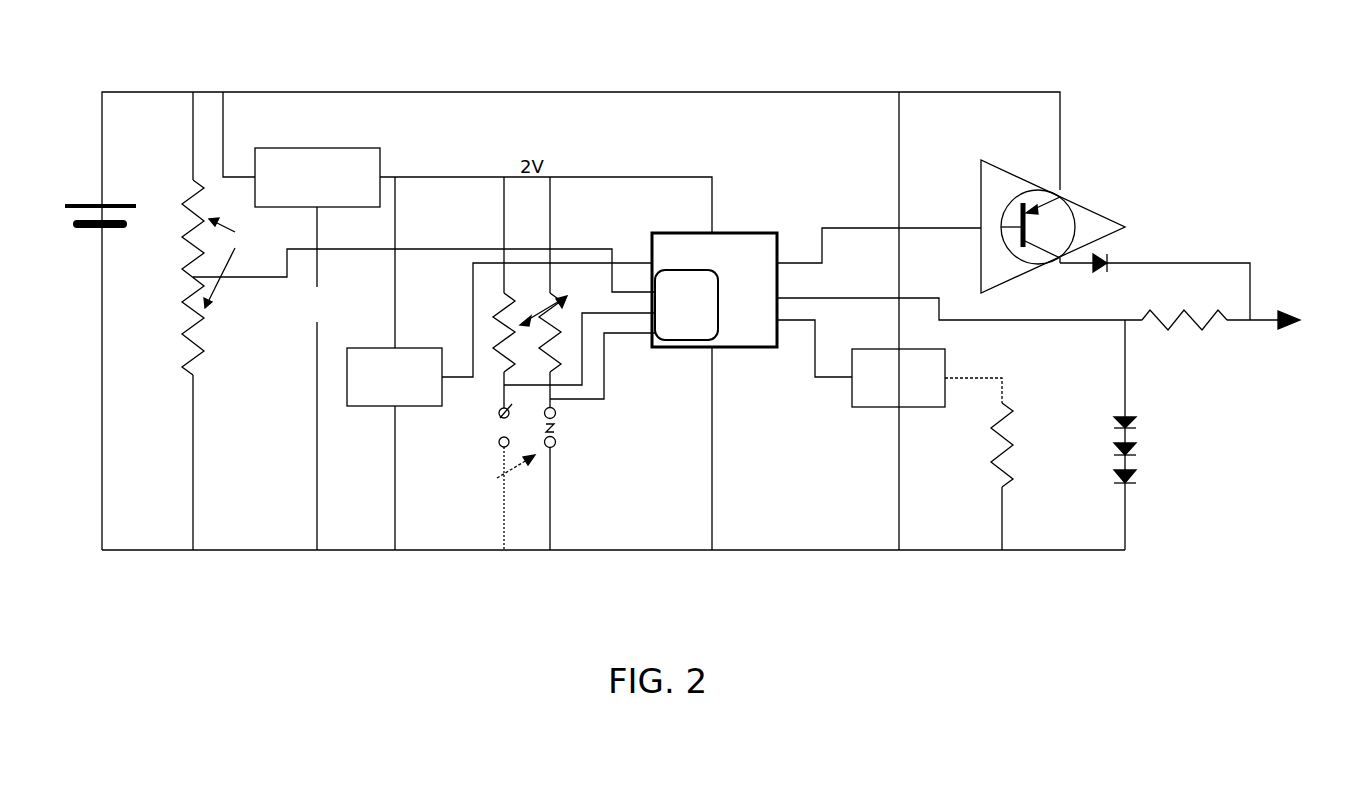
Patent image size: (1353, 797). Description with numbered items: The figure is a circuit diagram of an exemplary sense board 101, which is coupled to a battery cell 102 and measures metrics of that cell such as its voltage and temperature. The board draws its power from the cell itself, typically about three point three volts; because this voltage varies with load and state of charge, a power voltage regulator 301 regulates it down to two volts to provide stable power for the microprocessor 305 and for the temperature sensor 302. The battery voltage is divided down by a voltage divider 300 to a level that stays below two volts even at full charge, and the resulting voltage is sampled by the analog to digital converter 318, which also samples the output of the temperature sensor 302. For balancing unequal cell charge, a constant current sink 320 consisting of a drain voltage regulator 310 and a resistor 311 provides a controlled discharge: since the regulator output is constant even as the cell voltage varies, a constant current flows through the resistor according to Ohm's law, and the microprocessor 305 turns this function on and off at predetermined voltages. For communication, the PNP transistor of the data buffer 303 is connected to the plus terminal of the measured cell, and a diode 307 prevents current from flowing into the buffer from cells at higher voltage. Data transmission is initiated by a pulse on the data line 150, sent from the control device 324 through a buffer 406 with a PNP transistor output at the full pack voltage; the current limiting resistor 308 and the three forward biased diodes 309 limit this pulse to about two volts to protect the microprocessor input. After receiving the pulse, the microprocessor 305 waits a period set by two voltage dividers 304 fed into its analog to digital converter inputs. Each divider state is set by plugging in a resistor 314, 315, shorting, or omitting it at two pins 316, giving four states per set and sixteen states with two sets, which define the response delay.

The sense board 101 is at (747, 102).
The battery cell 102 is at (102, 205).
The data line 150 is at (1268, 322).
The voltage divider 300 is at (418, 321).
The power voltage regulator 301 is at (271, 172).
The temperature sensor 302 is at (357, 368).
The data buffer 303 is at (568, 295).
The voltage dividers 304 is at (490, 484).
The microprocessor 305 is at (896, 295).
The diode 307 is at (1110, 263).
The current limiting resistor 308 is at (1186, 322).
The three forward biased diodes 309 is at (1134, 479).
The drain voltage regulator 310 is at (880, 365).
The resistor 311 is at (1003, 455).
The resistor 314 is at (498, 415).
The resistor 315 is at (557, 442).
The pins 316 is at (557, 413).
The analog to digital converter 318 is at (674, 330).
The constant current sink 320 is at (1021, 448).
The control device 324 is at (728, 333).
The buffer 406 is at (1057, 195).